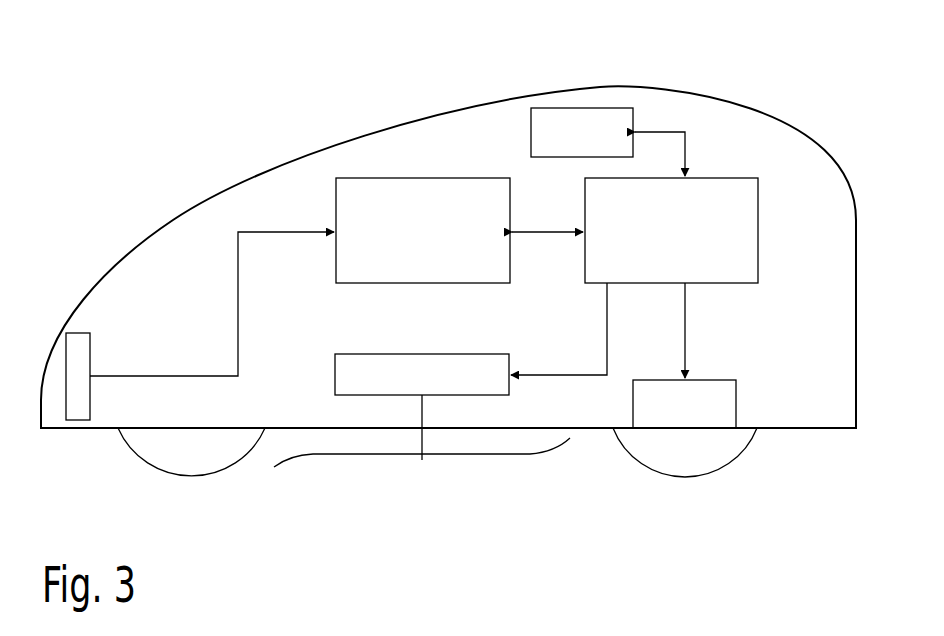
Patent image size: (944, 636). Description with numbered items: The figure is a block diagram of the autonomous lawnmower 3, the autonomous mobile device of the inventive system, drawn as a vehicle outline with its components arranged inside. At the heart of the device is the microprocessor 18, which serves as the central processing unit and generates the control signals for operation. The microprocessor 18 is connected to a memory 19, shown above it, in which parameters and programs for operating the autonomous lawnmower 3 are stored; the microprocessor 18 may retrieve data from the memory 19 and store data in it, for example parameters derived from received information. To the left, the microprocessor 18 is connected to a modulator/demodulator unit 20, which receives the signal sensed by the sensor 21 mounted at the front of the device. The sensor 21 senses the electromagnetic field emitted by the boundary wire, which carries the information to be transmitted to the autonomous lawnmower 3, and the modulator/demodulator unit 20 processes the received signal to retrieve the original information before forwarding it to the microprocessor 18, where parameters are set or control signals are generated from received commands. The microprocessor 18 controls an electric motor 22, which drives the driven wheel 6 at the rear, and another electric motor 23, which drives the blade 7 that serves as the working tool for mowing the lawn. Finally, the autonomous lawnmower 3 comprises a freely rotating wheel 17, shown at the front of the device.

The autonomous lawnmower 3 is at (168, 80).
The driven wheel 6 is at (688, 466).
The blade 7 is at (455, 455).
The freely rotating wheel 17 is at (192, 466).
The microprocessor 18 is at (745, 243).
The memory 19 is at (544, 133).
The modulator/demodulator unit 20 is at (346, 262).
The sensor 21 is at (78, 349).
The electric motor 22 is at (722, 398).
The electric motor 23 is at (347, 375).